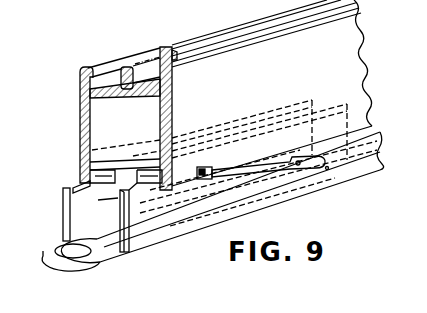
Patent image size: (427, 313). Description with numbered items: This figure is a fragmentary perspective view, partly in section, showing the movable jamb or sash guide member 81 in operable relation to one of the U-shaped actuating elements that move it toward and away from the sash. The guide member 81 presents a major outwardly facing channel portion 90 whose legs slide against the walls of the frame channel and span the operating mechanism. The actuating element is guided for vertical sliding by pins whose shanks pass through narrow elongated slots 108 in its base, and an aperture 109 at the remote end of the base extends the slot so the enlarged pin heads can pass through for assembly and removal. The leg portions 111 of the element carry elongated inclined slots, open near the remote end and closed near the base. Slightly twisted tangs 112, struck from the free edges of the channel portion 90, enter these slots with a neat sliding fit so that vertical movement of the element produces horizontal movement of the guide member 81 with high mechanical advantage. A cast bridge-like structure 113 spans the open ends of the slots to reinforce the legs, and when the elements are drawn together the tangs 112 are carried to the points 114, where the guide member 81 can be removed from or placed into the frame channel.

The movable jamb or sash guide member 81 is at (79, 88).
The channel portion 90 is at (94, 131).
The elongated slots 108 is at (108, 243).
The aperture 109 is at (82, 258).
The leg portions 111 is at (270, 165).
The tangs 112 is at (88, 173).
The bridge-like structure 113 is at (112, 156).
The points 114 is at (64, 203).